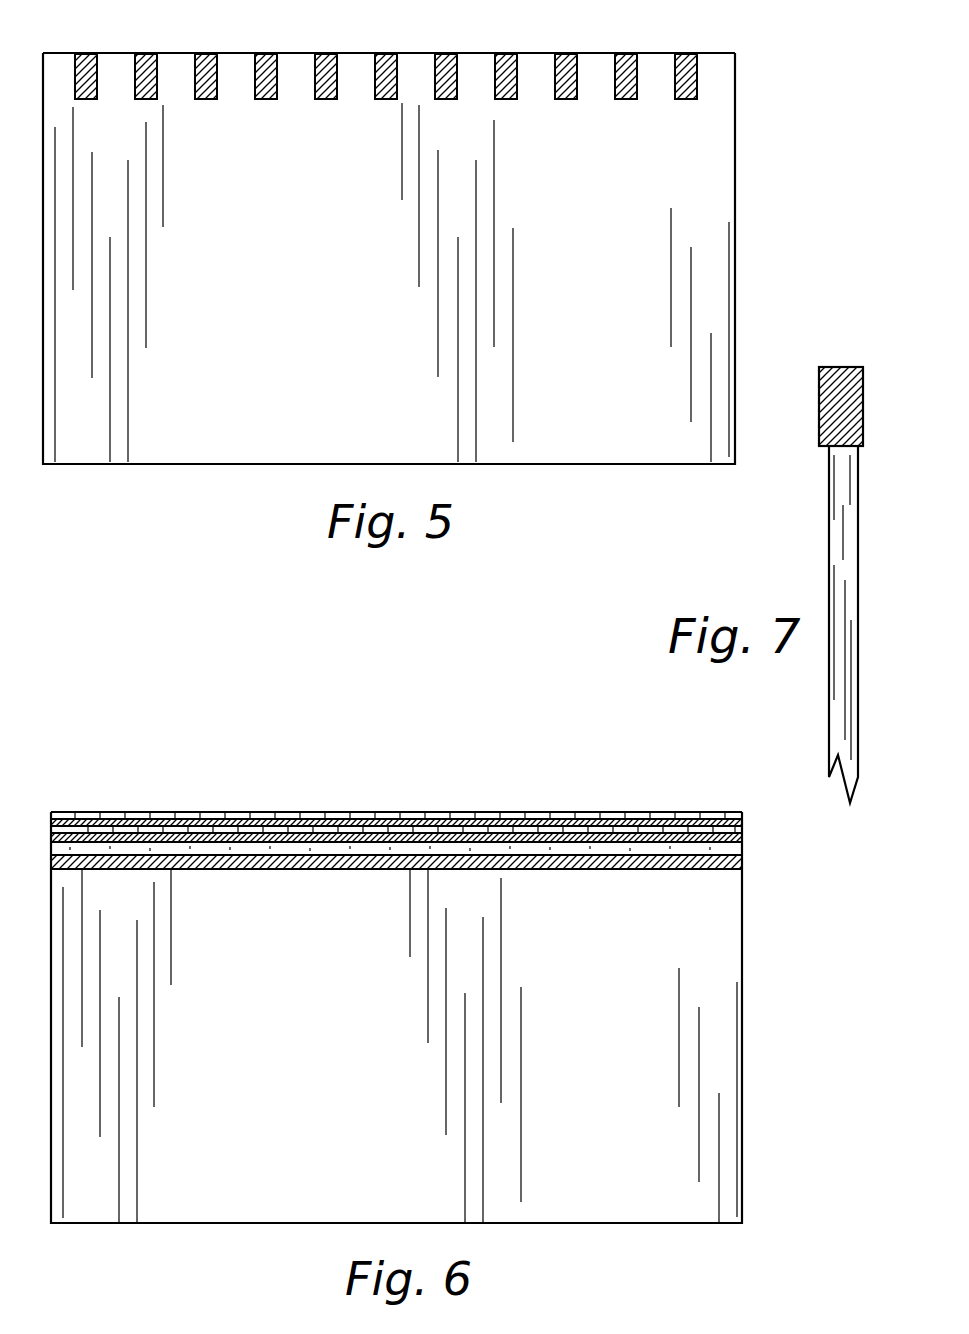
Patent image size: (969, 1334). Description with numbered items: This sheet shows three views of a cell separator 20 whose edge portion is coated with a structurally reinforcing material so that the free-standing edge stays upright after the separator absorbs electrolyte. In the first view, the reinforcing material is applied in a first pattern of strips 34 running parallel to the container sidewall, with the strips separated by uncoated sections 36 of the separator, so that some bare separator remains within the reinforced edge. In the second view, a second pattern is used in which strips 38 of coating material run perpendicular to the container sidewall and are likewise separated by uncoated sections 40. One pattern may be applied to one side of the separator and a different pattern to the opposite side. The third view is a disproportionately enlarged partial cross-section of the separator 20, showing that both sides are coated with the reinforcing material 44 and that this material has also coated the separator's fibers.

In FIG. 5, the separator 20 is at (754, 95).
In FIG. 6, the separator 20 is at (764, 1052).
In FIG. 7, the separator 20 is at (858, 640).
In FIG. 5, the strips of reinforcing material 34 is at (211, 53).
In FIG. 5, the uncoated sections 36 is at (290, 78).
In FIG. 6, the strips of coating material 38 is at (350, 818).
In FIG. 6, the uncoated sections 40 is at (568, 850).
In FIG. 7, the reinforcing material 44 is at (863, 403).